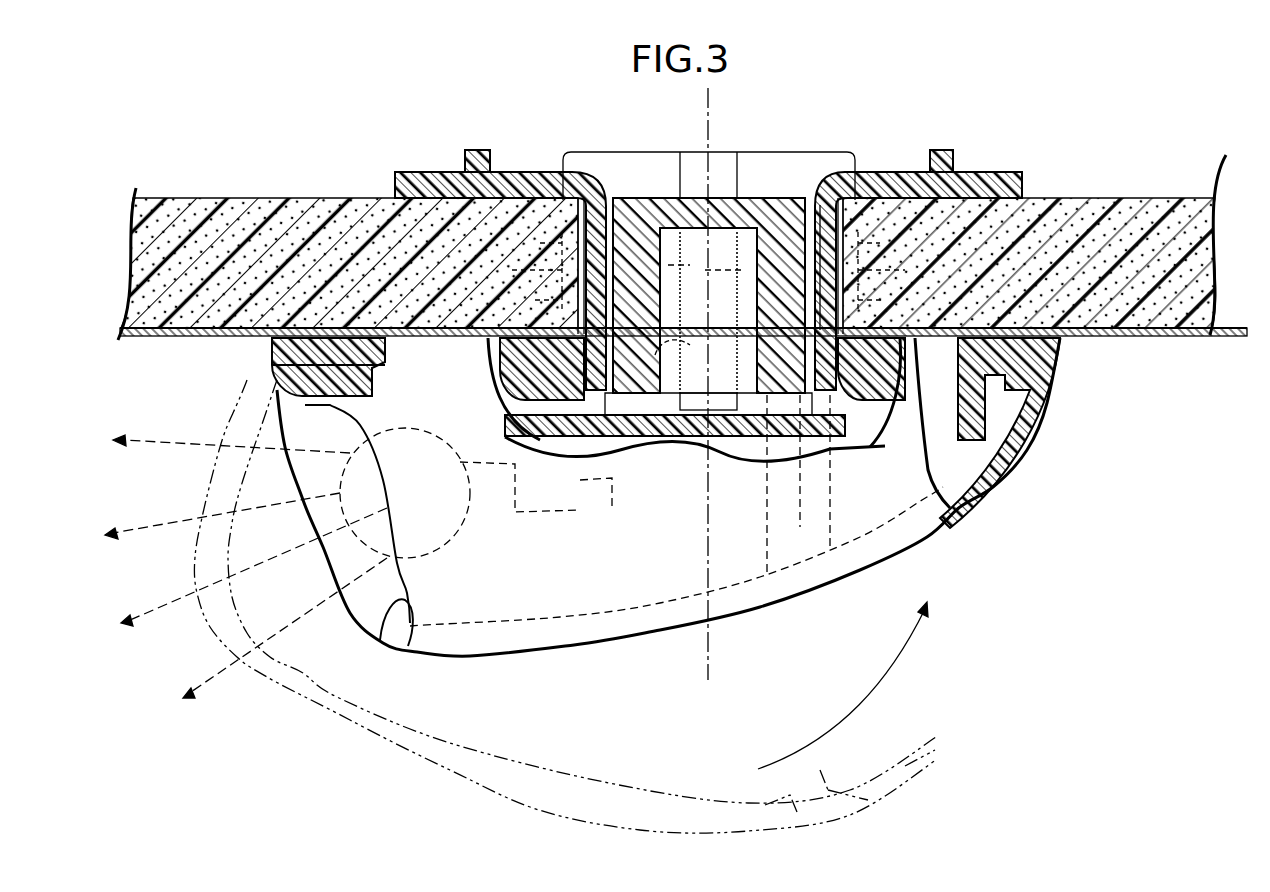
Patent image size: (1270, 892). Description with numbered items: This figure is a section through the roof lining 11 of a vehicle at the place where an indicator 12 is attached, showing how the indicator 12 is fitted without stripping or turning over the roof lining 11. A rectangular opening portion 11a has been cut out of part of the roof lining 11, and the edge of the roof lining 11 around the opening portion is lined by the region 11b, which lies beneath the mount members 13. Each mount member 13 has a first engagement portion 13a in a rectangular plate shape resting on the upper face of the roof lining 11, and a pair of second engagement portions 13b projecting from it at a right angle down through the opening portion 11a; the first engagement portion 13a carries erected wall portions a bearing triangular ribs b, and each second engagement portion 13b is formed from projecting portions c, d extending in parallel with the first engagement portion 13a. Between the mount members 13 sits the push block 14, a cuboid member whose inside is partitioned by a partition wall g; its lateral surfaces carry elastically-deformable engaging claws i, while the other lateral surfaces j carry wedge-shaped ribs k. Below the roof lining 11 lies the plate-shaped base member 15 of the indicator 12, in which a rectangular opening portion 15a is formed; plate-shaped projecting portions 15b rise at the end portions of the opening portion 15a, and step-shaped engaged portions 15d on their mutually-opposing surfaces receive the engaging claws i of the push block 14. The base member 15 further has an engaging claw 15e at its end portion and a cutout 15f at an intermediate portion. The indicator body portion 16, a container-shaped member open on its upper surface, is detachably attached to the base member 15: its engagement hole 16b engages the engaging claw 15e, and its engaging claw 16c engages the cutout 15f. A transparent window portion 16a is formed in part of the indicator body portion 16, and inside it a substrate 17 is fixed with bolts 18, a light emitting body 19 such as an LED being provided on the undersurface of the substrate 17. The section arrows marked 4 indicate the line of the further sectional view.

The section line IV-IV 4 is at (182, 338).
The roof lining 11 is at (1115, 192).
The opening portion 11a is at (824, 205).
The liner sheet 11b is at (604, 200).
The indicator 12 is at (726, 648).
The mount member 13 is at (537, 168).
The first engagement portion 13a is at (503, 170).
The second engagement portion 13b is at (566, 400).
The push block 14 is at (646, 192).
The base member 15 is at (487, 347).
The opening portion 15a is at (783, 315).
The projecting portion 15b is at (760, 160).
The engaged portion 15d is at (653, 348).
The engaging claw 15e is at (995, 468).
The cutout 15f is at (320, 335).
The indicator body portion 16 is at (593, 648).
The transparent window portion 16a is at (380, 640).
The engagement hole 16b is at (1018, 450).
The engaging claw 16c is at (310, 340).
The substrate 17 is at (660, 436).
The bolt 18 is at (706, 321).
The light emitting body 19 is at (436, 568).
The erected wall portion a is at (540, 270).
The triangular rib b is at (540, 243).
The projecting portion c is at (560, 305).
The projecting portion d is at (520, 407).
The partition wall g is at (688, 303).
The engaging claw i is at (688, 345).
The lateral surface j is at (612, 255).
The wedge-shaped rib k is at (605, 390).